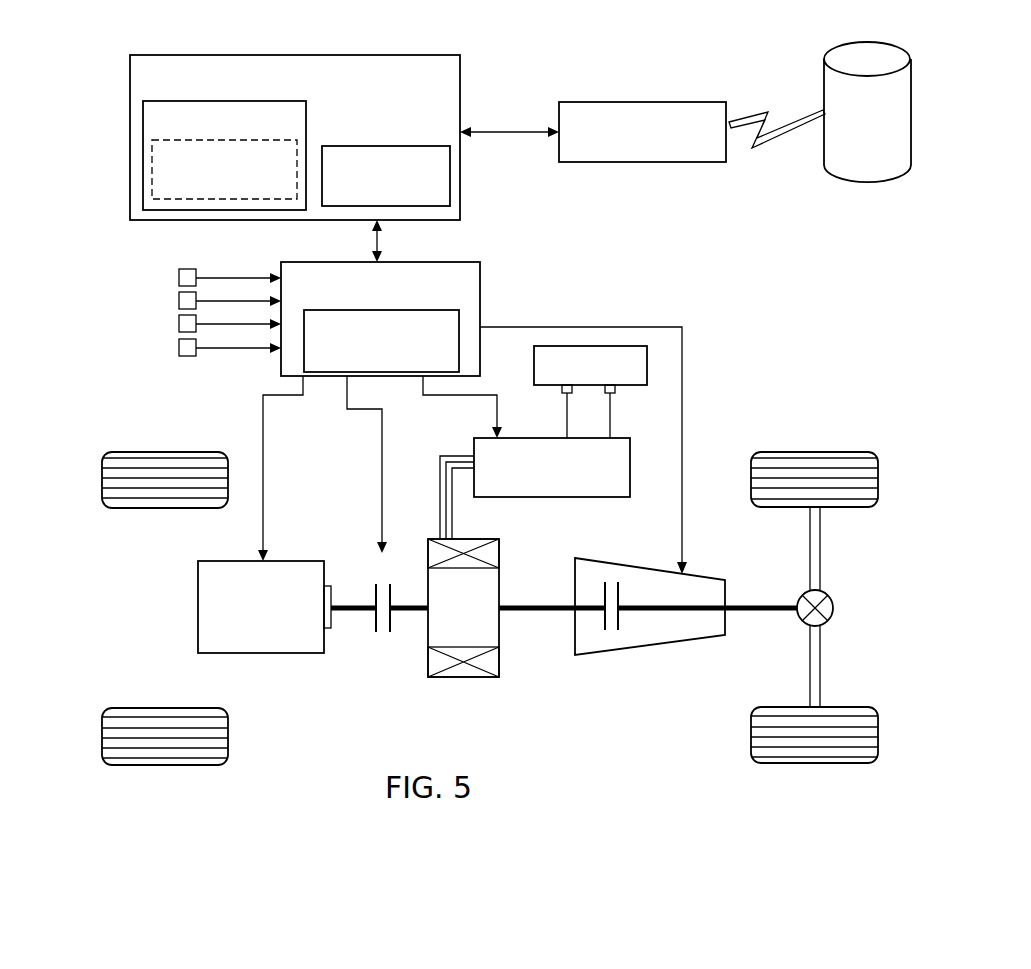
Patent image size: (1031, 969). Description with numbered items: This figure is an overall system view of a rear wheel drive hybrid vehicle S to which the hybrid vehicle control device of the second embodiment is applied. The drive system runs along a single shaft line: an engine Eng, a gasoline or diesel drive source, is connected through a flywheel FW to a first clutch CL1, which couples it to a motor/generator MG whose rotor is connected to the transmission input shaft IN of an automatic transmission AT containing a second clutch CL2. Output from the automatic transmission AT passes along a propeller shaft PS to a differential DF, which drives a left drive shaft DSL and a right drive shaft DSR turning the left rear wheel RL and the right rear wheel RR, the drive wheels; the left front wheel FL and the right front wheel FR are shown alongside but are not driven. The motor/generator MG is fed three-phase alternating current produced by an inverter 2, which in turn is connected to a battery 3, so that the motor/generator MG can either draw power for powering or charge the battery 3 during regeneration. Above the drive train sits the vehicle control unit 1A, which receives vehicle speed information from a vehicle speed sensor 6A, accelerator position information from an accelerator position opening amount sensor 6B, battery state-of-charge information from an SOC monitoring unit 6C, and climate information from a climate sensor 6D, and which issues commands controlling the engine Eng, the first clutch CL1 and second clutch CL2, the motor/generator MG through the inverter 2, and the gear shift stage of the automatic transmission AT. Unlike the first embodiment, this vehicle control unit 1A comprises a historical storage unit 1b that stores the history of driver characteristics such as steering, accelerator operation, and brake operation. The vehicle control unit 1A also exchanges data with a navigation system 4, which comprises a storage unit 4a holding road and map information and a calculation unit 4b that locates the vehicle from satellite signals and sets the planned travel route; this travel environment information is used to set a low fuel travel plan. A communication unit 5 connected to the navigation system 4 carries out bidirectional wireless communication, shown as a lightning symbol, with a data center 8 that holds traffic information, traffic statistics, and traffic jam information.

The navigation system 4 is at (130, 80).
The storage unit 4a is at (143, 148).
The calculation unit 4b is at (450, 175).
The communication unit 5 is at (622, 102).
The data center 8 is at (911, 88).
The vehicle control unit 1A is at (290, 262).
The historical storage unit 1b is at (480, 290).
The vehicle speed sensor 6A is at (179, 278).
The accelerator position opening amount sensor 6B is at (179, 300).
The SOC monitoring unit 6C is at (179, 323).
The climate sensor 6D is at (179, 347).
The hybrid vehicle S is at (216, 412).
The battery 3 is at (534, 370).
The inverter 2 is at (474, 447).
The engine Eng is at (261, 607).
The flywheel FW is at (331, 623).
The first clutch CL1 is at (381, 593).
The motor/generator MG is at (463, 608).
The transmission input shaft IN is at (538, 613).
The automatic transmission AT is at (680, 640).
The second clutch CL2 is at (610, 594).
The propeller shaft PS is at (748, 615).
The differential DF is at (834, 602).
The right drive shaft DSR is at (821, 548).
The left drive shaft DSL is at (821, 668).
The right rear wheel RR is at (878, 476).
The left rear wheel RL is at (878, 738).
The right front wheel FR is at (102, 482).
The left front wheel FL is at (102, 745).